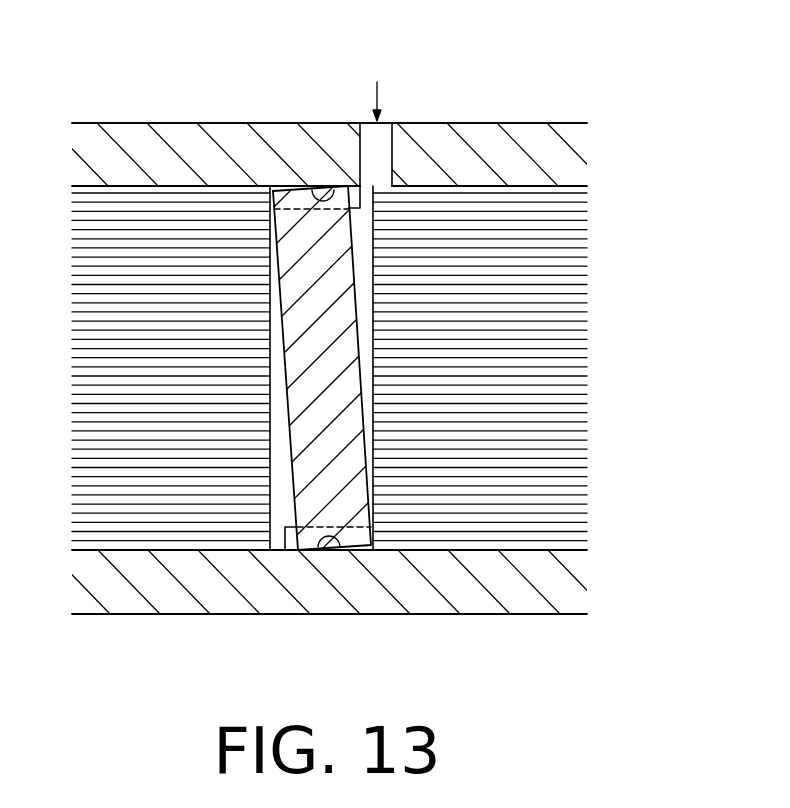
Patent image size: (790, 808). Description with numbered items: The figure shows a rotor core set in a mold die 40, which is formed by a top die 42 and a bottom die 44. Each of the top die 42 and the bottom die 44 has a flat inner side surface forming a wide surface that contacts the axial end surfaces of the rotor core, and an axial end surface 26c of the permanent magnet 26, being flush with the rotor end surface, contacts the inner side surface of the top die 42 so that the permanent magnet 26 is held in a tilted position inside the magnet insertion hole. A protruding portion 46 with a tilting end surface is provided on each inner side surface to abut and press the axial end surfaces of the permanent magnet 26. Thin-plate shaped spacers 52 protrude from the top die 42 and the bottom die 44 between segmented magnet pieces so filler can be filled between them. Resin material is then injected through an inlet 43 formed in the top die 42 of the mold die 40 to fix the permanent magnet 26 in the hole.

The permanent magnet 26 is at (345, 355).
The axial end surface of the permanent magnet 26c is at (340, 187).
The mold die 40 is at (330, 356).
The top die 42 is at (535, 150).
The inlet 43 is at (392, 158).
The bottom die 44 is at (522, 615).
The protruding portion 46 is at (320, 187).
The spacer 52 is at (348, 208).